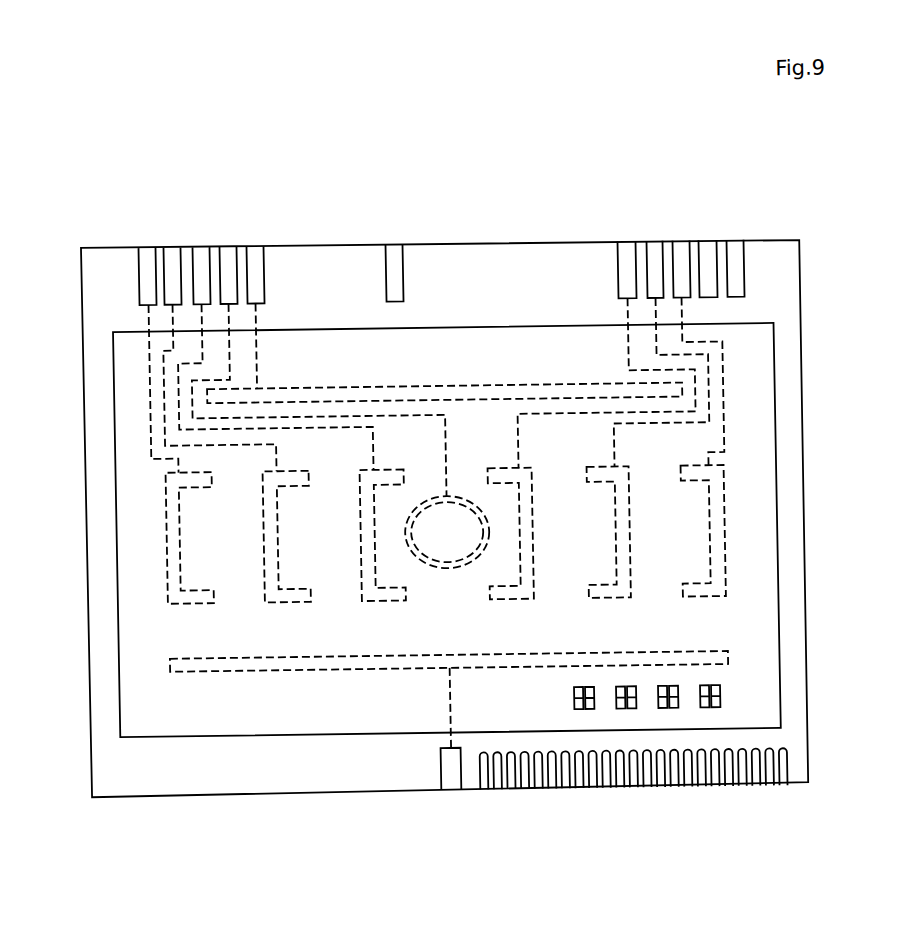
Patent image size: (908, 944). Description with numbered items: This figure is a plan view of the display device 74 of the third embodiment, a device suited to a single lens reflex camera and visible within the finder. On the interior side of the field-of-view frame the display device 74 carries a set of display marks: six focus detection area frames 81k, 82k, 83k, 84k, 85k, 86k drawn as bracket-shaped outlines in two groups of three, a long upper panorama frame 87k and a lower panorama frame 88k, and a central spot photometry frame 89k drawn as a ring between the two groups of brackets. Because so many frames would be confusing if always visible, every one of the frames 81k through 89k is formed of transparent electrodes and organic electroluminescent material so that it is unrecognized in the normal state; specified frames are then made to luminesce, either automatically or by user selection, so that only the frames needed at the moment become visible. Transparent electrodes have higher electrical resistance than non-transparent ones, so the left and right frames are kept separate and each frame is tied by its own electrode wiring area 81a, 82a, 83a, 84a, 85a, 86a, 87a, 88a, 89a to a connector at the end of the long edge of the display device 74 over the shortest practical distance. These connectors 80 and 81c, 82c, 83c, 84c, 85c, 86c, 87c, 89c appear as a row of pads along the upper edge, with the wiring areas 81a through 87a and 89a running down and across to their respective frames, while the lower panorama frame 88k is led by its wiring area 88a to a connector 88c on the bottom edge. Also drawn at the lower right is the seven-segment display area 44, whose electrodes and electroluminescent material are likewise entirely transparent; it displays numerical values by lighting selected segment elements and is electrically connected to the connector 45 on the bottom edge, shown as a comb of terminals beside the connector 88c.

The display device 74 is at (808, 249).
The connector 80 is at (390, 264).
The connector 81c is at (143, 264).
The connector 82c is at (167, 257).
The connector 83c is at (199, 265).
The connector 84c is at (622, 264).
The connector 85c is at (650, 264).
The connector 86c is at (677, 264).
The connector 87c is at (251, 266).
The connector 89c is at (225, 261).
The electrode wiring area 81a is at (143, 442).
The electrode wiring area 82a is at (244, 448).
The electrode wiring area 83a is at (347, 437).
The electrode wiring area 84a is at (573, 421).
The electrode wiring area 85a is at (677, 437).
The electrode wiring area 86a is at (720, 425).
The electrode wiring area 87a is at (254, 361).
The electrode wiring area 88a is at (437, 714).
The electrode wiring area 89a is at (416, 422).
The focus detection area frame 81k is at (158, 530).
The focus detection area frame 82k is at (254, 532).
The focus detection area frame 83k is at (352, 527).
The focus detection area frame 84k is at (526, 530).
The focus detection area frame 85k is at (621, 531).
The focus detection area frame 86k is at (716, 530).
The panorama frame 87k is at (410, 393).
The panorama frame 88k is at (270, 677).
The spot photometry frame 89k is at (440, 576).
The connector 88c is at (438, 783).
The 7-segment display area 44 is at (710, 705).
The connector 45 is at (466, 800).